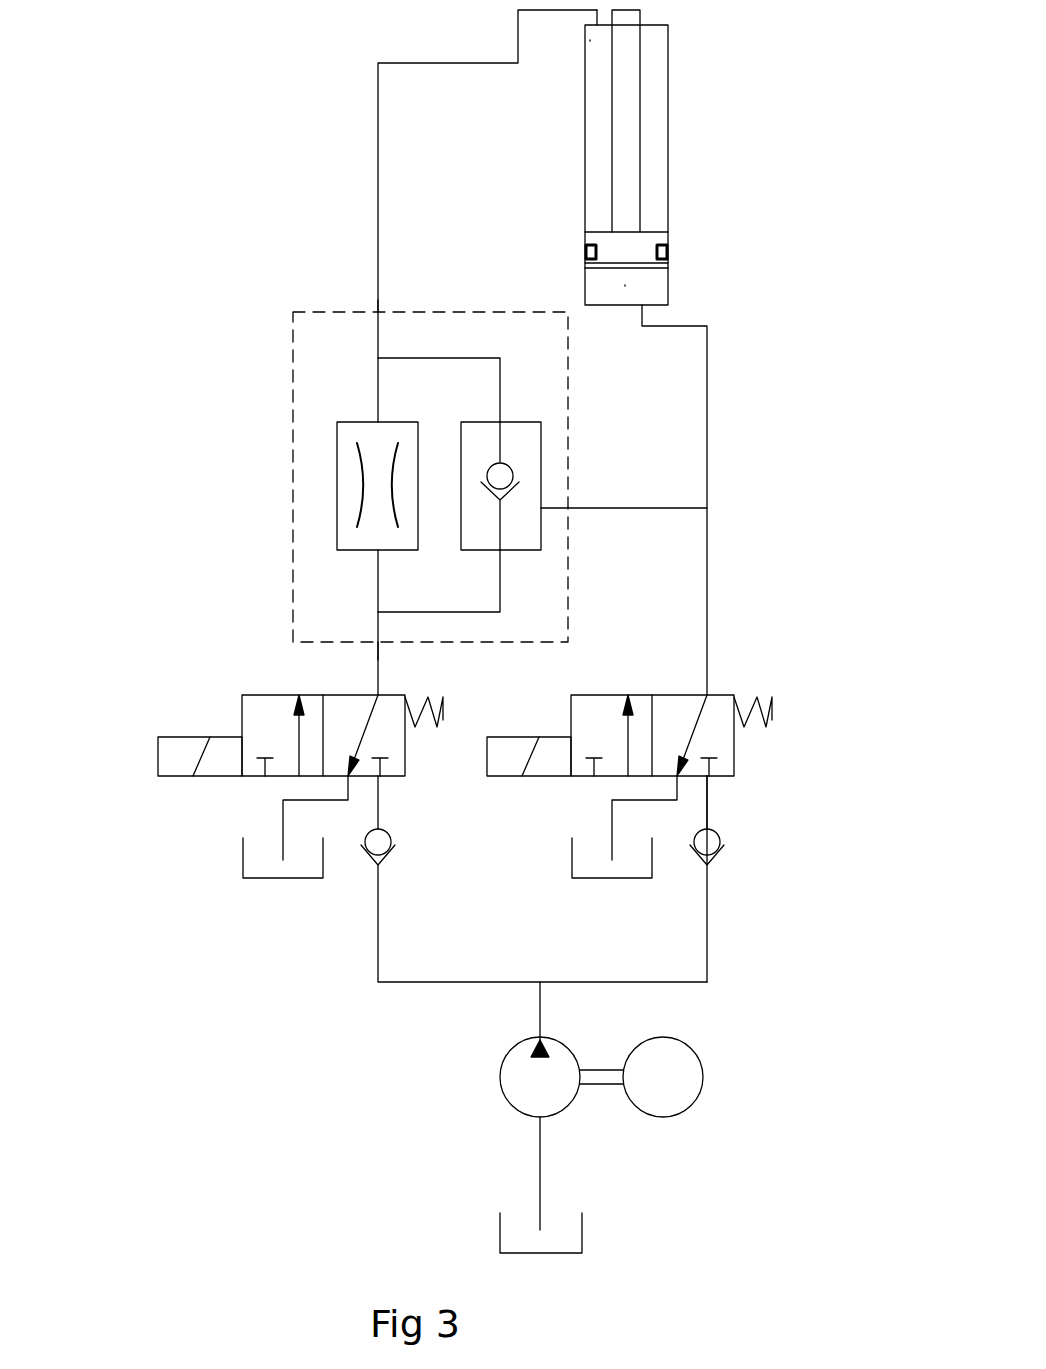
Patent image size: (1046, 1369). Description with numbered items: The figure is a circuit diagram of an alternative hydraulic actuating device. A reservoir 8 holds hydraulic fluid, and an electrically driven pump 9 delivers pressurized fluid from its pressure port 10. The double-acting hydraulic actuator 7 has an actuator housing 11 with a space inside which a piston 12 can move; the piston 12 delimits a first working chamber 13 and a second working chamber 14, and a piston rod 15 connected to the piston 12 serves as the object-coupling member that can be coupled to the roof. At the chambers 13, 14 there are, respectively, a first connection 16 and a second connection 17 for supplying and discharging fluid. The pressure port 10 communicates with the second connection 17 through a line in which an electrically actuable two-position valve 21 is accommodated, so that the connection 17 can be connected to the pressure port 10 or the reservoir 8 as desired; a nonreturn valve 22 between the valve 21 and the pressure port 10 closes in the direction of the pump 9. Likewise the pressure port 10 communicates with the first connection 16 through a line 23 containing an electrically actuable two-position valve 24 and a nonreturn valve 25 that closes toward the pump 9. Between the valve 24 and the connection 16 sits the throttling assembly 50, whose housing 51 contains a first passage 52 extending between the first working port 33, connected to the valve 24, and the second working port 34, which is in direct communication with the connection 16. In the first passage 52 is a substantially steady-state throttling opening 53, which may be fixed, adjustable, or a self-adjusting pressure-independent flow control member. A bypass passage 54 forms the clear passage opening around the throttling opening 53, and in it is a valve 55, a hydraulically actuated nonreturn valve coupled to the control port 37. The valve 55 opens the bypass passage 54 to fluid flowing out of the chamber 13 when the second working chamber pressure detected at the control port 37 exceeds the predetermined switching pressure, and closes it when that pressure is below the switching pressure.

The double-acting hydraulic actuator 7 is at (549, 192).
The reservoir 8 is at (243, 875).
The electrically driven pump 9 is at (510, 1068).
The pressure port 10 is at (541, 1037).
The actuator housing 11 is at (668, 112).
The piston 12 is at (616, 256).
The first working chamber 13 is at (595, 125).
The second working chamber 14 is at (621, 303).
The piston rod 15 is at (626, 90).
The first connection 16 is at (597, 30).
The second connection 17 is at (641, 310).
The electrically actuable two-position valve 21 is at (662, 677).
The nonreturn valve 22 is at (738, 832).
The line 23 is at (378, 170).
The electrically actuable two-position valve 24 is at (214, 694).
The nonreturn valve 25 is at (408, 832).
The first working port 33 is at (378, 645).
The second working port 34 is at (378, 312).
The control port 37 is at (565, 508).
The throttling assembly 50 is at (269, 455).
The housing 51 is at (293, 388).
The first passage 52 is at (378, 392).
The throttling opening 53 is at (337, 507).
The bypass passage 54 is at (503, 573).
The valve 55 is at (541, 453).